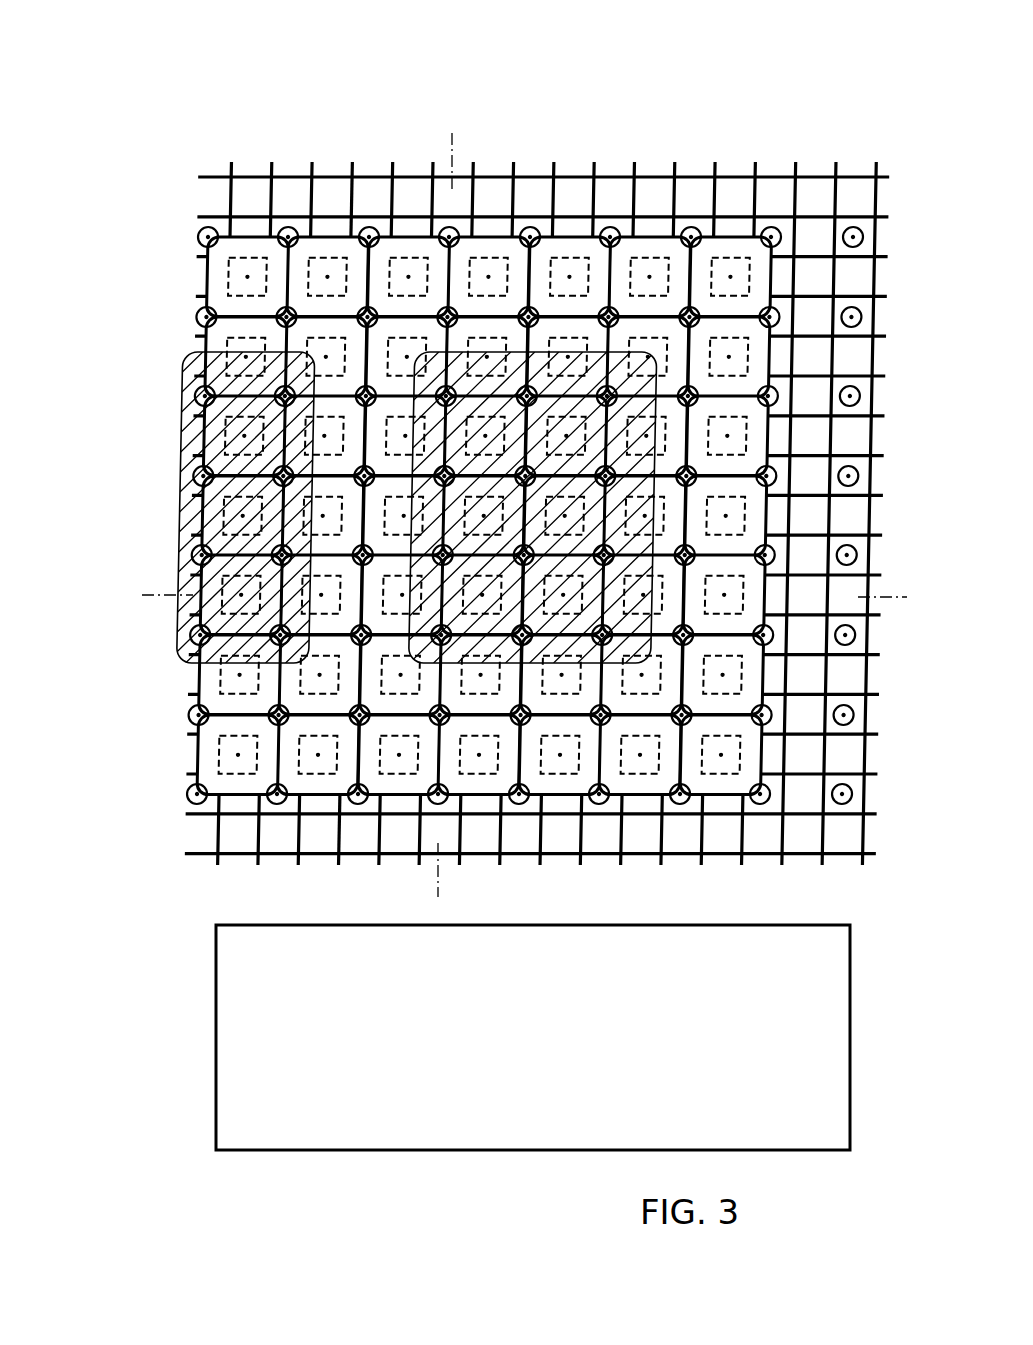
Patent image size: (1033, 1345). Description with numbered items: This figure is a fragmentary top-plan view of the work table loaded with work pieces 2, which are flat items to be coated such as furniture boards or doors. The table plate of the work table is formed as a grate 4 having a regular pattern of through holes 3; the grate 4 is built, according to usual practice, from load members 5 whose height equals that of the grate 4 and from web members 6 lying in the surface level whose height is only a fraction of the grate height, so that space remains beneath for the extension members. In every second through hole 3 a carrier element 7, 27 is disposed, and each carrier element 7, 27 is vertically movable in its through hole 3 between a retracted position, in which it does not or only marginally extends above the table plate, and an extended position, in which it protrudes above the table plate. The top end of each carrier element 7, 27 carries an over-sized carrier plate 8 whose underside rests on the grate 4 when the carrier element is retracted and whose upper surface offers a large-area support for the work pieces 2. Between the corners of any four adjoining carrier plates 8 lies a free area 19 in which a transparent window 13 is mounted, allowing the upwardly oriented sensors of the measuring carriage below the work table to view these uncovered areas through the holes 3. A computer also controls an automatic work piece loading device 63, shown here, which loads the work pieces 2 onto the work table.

The work piece 2 is at (487, 407).
The through hole 3 is at (250, 195).
The grate 4 is at (293, 143).
The load member 5 is at (333, 177).
The web member 6 is at (352, 208).
The carrier element 7 is at (411, 275).
The carrier plate 8 is at (572, 255).
The transparent window 13 is at (853, 228).
The free area 19 is at (613, 315).
The carrier element 27 is at (517, 337).
The automatic work piece loading device 63 is at (245, 985).